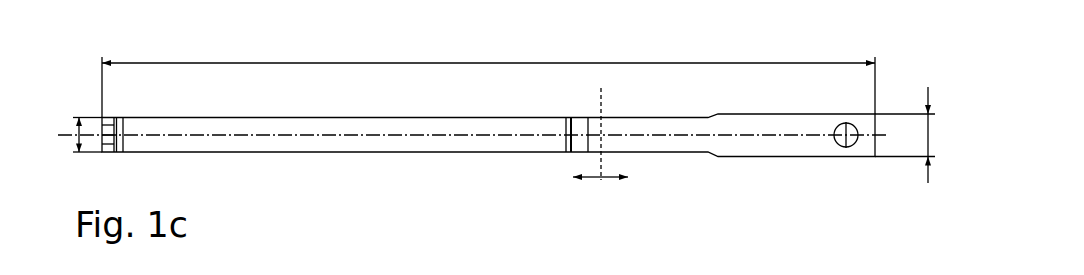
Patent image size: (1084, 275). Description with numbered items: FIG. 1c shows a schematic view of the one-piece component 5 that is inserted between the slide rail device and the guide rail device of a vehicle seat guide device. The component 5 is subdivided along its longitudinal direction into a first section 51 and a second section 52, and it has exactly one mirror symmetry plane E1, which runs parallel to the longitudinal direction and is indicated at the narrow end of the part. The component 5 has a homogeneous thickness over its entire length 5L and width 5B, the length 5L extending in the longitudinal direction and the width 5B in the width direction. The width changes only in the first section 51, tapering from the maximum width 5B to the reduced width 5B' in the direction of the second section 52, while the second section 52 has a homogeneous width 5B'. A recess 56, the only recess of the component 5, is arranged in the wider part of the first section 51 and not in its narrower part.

The component 5 is at (227, 157).
The length 5L is at (483, 62).
The width 5B is at (905, 135).
The reduced width 5B' is at (63, 150).
The mirror symmetry plane E1 is at (67, 127).
The first section 51 is at (624, 187).
The second section 52 is at (577, 144).
The recess 56 is at (856, 150).